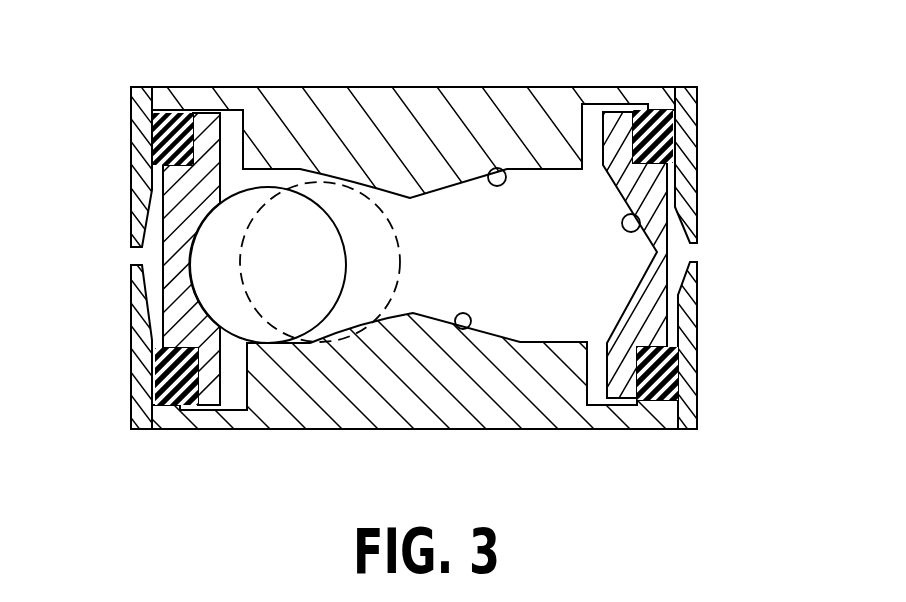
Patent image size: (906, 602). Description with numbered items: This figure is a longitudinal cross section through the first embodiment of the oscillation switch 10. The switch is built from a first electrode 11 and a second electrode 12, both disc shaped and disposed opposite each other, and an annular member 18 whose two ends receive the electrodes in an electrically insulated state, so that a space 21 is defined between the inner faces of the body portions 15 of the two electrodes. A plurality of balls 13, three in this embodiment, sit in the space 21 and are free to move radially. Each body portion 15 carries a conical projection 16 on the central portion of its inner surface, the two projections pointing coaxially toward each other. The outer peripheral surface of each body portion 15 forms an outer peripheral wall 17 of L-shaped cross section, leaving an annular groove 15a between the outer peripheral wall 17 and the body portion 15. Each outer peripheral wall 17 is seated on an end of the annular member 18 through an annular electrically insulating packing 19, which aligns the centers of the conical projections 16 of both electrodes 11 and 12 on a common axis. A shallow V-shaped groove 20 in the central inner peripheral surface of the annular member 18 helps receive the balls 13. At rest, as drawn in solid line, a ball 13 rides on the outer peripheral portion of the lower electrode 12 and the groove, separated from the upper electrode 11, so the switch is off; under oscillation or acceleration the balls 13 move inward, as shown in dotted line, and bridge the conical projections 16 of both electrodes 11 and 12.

The oscillation switch 10 is at (144, 77).
The first electrode 11 is at (307, 80).
The second electrode 12 is at (302, 438).
The ball 13 is at (228, 301).
The body portion 15 is at (530, 108).
The annular groove 15a is at (237, 130).
The conical projection 16 is at (497, 168).
The outer peripheral wall 17 is at (138, 203).
The annular member 18 is at (650, 184).
The annular electrically insulating packing 19 is at (675, 370).
The shallow V-shaped groove 20 is at (640, 226).
The space 21 is at (547, 320).